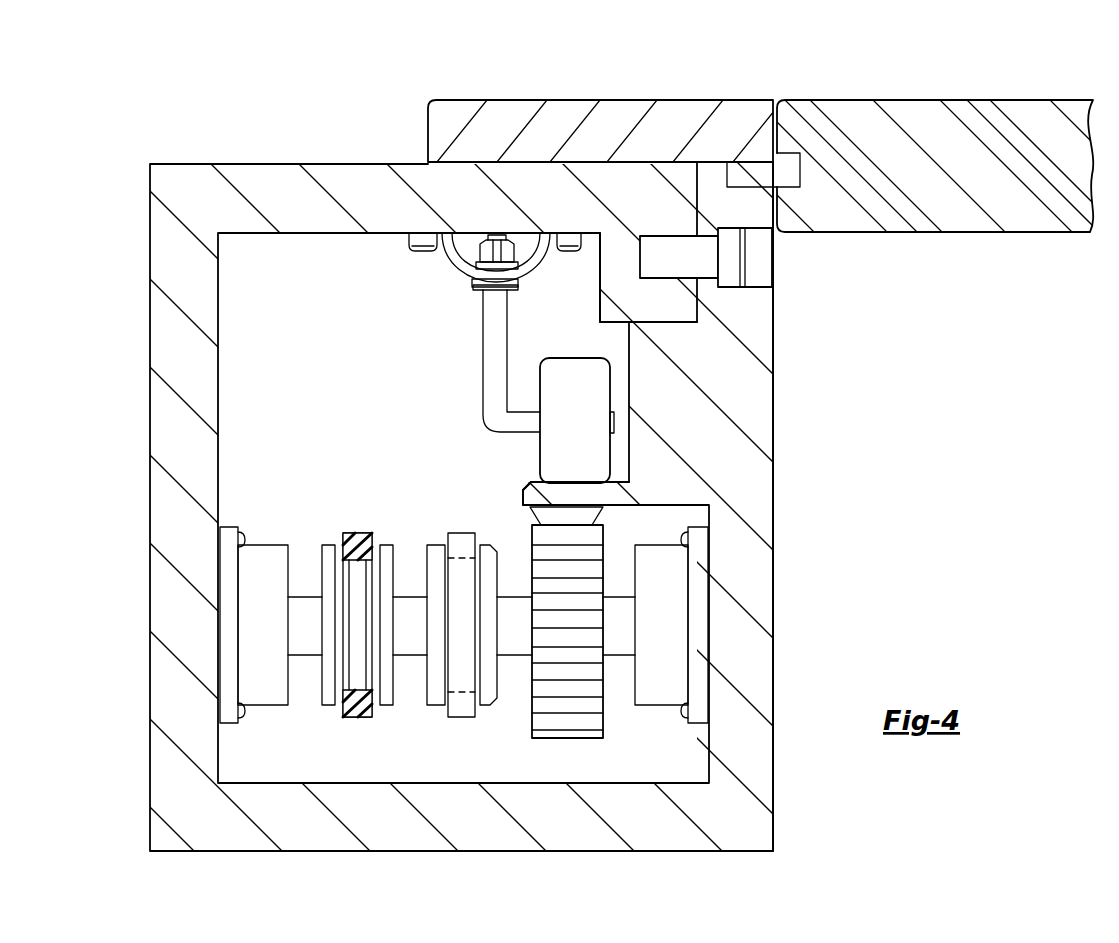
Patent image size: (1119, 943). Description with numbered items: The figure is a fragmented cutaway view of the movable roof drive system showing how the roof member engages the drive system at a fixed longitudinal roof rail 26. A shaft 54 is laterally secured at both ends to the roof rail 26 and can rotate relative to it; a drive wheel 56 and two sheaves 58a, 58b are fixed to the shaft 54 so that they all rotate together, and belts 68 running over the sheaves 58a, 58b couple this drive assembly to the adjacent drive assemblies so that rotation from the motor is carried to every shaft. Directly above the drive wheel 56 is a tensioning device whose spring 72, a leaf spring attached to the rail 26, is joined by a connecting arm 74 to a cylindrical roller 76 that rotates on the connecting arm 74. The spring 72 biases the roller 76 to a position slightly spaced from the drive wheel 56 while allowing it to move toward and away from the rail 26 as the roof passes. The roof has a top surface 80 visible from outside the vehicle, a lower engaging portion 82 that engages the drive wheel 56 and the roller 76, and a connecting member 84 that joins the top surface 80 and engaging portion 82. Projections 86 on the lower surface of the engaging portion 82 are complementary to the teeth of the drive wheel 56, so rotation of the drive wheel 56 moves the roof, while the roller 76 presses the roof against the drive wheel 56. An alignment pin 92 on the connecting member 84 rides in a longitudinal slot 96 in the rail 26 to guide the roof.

The fixed longitudinal roof rail 26 is at (278, 163).
The top surface 80 is at (813, 90).
The connecting member 84 is at (762, 330).
The slot 96 is at (658, 236).
The alignment pin 92 is at (653, 255).
The spring 72 is at (442, 263).
The connecting arm 74 is at (483, 362).
The cylindrical roller 76 is at (540, 458).
The engaging portion 82 is at (600, 493).
The projection 86 is at (546, 510).
The shaft 54 is at (520, 648).
The drive wheel 56 is at (574, 738).
The sheave 58a is at (433, 706).
The sheave 58b is at (336, 706).
The belt 68 is at (448, 535).